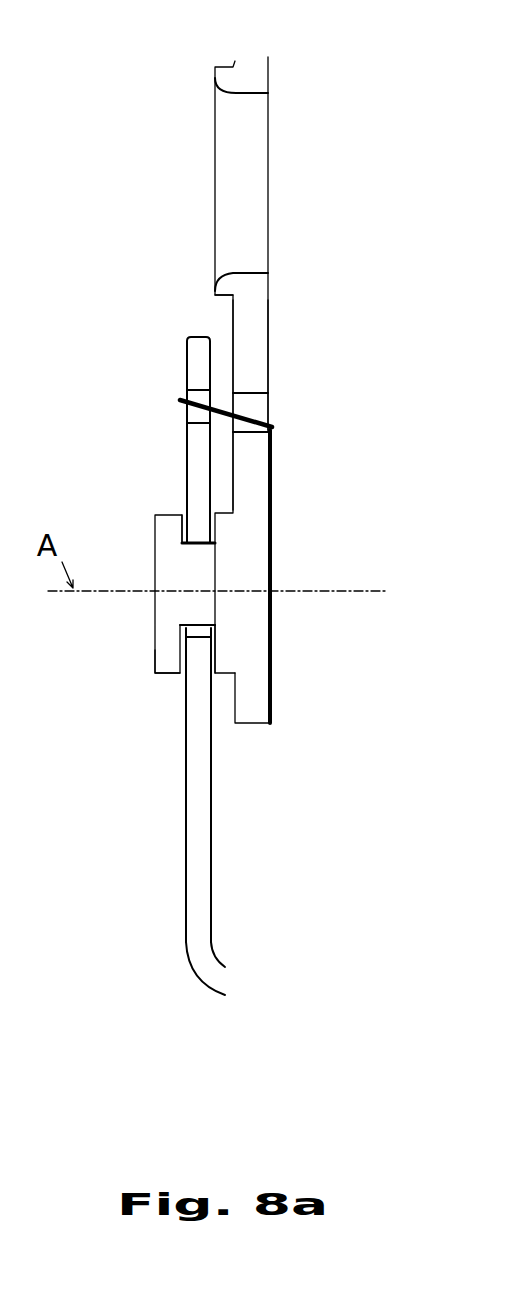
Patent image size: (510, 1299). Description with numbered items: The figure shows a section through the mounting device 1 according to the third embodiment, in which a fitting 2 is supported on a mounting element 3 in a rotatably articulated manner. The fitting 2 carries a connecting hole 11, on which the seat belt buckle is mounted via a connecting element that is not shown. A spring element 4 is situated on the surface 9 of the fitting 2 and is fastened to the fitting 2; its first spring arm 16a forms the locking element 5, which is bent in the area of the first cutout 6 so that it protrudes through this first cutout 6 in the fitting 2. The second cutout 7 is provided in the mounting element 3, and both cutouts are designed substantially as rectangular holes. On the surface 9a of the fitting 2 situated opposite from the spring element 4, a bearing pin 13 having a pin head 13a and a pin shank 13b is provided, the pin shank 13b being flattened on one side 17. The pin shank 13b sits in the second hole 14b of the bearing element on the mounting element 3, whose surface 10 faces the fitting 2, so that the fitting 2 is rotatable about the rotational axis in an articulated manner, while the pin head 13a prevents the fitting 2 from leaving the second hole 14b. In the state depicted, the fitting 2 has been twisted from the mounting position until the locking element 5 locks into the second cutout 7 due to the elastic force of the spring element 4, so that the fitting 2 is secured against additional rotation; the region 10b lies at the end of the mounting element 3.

The connecting arrangement 1 is at (332, 837).
The fitting 2 is at (253, 77).
The mounting element 3 is at (197, 853).
The spring element 4 is at (272, 556).
The locking element 5 is at (207, 410).
The first cutout 6 is at (265, 390).
The second cutout 7 is at (190, 388).
The surface of the fitting 9 is at (277, 310).
The surface of the fitting facing the mounting element 9a is at (226, 317).
The surface of the mounting element 10 is at (221, 788).
The upper end of second leg 10b is at (176, 784).
The connecting hole 11 is at (245, 177).
The bearing pin 13 is at (118, 627).
The pin head 13a is at (165, 642).
The pin shank 13b is at (197, 557).
The second hole 14b is at (200, 632).
The first spring arm 16a is at (282, 437).
The flattened side 17 is at (217, 619).